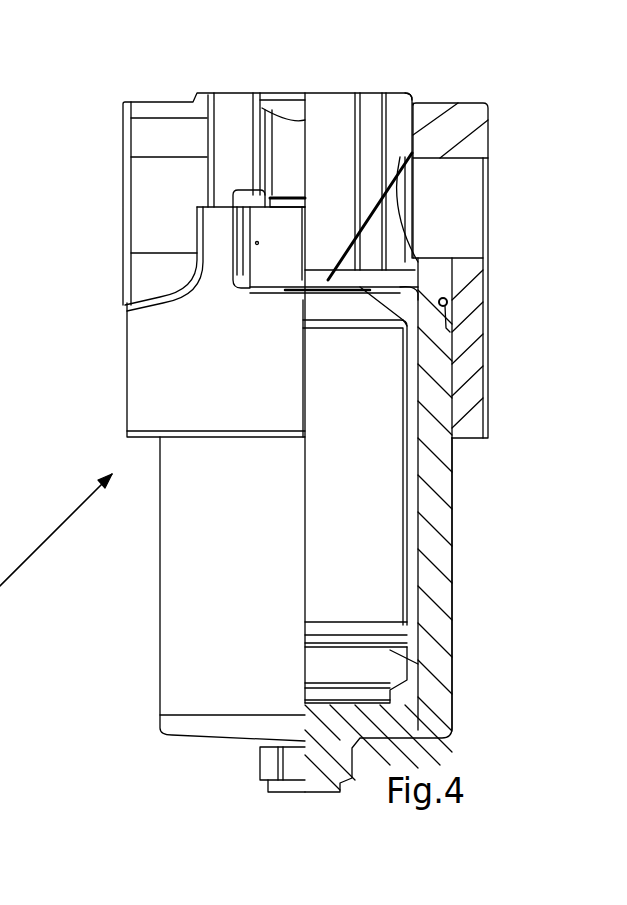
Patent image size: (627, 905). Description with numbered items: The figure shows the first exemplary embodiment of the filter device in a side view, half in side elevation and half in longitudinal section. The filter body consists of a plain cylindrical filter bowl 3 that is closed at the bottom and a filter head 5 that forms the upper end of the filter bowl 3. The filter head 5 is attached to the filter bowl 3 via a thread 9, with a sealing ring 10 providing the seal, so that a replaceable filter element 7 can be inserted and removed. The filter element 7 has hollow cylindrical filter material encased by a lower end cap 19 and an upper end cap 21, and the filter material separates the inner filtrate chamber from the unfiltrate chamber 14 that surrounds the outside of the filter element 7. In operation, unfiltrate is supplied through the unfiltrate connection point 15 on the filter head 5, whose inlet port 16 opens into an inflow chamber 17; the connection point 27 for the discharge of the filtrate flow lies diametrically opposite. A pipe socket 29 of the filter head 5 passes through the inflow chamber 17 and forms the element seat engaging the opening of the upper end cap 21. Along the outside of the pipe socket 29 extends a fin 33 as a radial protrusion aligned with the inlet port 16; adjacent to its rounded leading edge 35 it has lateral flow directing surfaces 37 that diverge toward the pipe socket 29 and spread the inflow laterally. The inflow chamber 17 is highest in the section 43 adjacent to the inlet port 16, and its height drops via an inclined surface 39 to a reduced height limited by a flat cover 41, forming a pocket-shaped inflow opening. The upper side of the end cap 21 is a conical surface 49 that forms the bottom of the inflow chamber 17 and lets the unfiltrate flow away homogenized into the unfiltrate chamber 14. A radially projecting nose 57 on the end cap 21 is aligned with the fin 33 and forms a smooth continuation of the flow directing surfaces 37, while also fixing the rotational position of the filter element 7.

The filter bowl 3 is at (178, 543).
The filter head 5 is at (150, 333).
The filter element 7 is at (367, 528).
The thread 9 is at (452, 407).
The sealing ring 10 is at (447, 308).
The unfiltrate chamber 14 is at (420, 450).
The unfiltrate connection point 15 is at (488, 153).
The inlet port 16 is at (417, 255).
The inflow chamber 17 is at (410, 273).
The lower end cap 19 is at (383, 650).
The upper end cap 21 is at (405, 325).
The connection point 27 is at (123, 172).
The pipe socket 29 is at (305, 262).
The fin 33 is at (382, 243).
The rounded leading edge 35 is at (418, 214).
The flow directing surfaces 37 is at (380, 243).
The inclined surface 39 is at (314, 197).
The flat cover 41 is at (305, 298).
The section adjacent to inlet port 43 is at (413, 108).
The conical surface 49 is at (331, 300).
The nose 57 is at (374, 300).